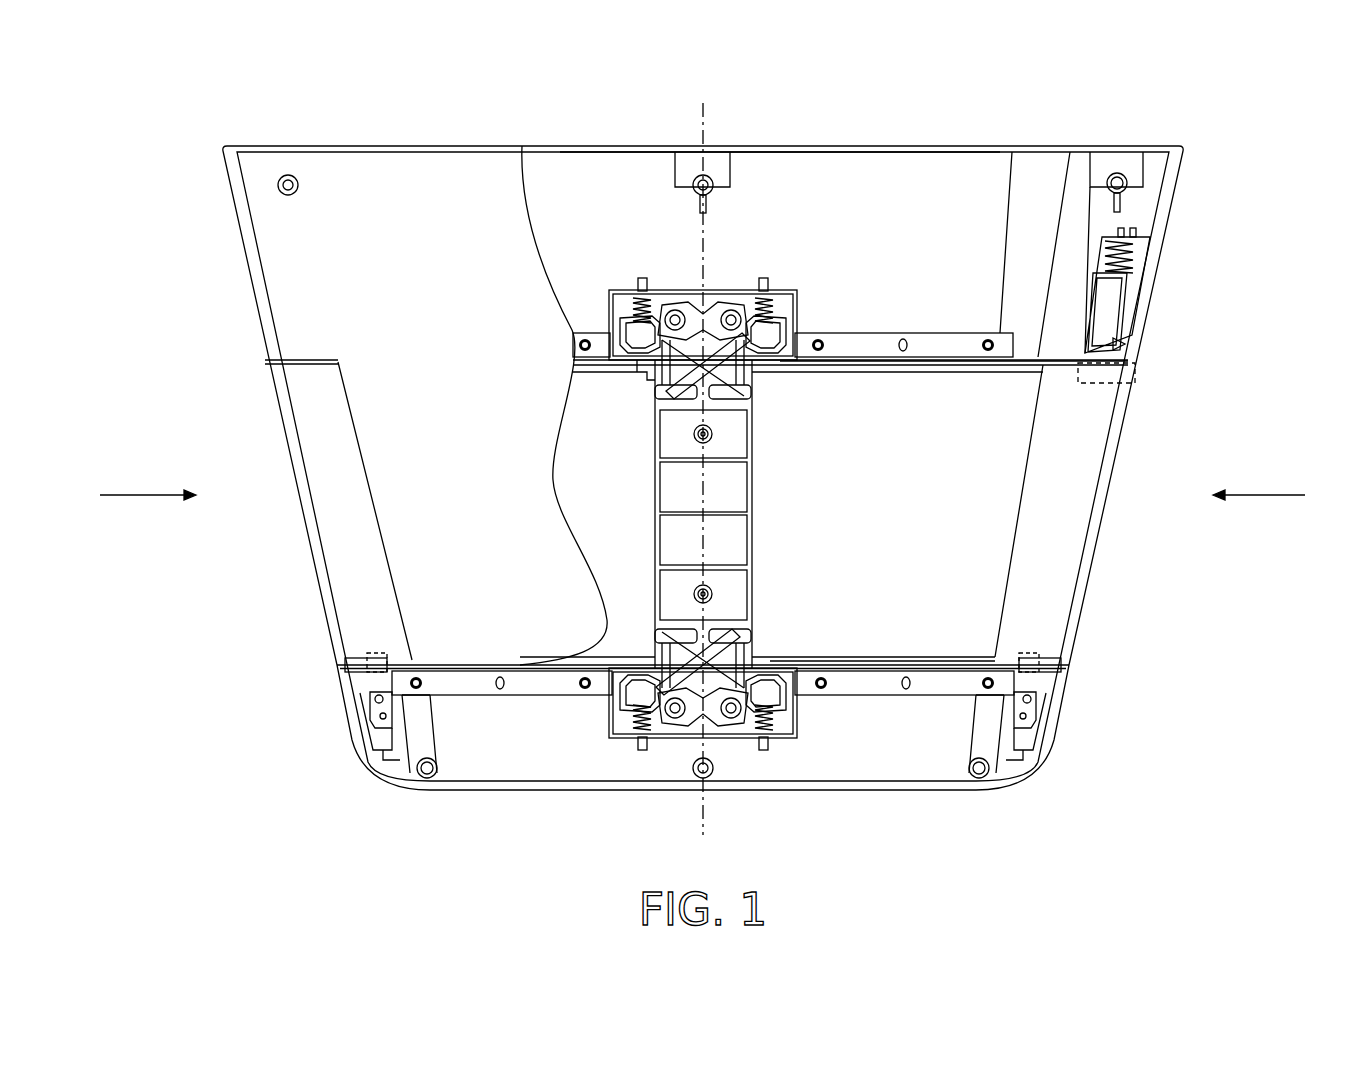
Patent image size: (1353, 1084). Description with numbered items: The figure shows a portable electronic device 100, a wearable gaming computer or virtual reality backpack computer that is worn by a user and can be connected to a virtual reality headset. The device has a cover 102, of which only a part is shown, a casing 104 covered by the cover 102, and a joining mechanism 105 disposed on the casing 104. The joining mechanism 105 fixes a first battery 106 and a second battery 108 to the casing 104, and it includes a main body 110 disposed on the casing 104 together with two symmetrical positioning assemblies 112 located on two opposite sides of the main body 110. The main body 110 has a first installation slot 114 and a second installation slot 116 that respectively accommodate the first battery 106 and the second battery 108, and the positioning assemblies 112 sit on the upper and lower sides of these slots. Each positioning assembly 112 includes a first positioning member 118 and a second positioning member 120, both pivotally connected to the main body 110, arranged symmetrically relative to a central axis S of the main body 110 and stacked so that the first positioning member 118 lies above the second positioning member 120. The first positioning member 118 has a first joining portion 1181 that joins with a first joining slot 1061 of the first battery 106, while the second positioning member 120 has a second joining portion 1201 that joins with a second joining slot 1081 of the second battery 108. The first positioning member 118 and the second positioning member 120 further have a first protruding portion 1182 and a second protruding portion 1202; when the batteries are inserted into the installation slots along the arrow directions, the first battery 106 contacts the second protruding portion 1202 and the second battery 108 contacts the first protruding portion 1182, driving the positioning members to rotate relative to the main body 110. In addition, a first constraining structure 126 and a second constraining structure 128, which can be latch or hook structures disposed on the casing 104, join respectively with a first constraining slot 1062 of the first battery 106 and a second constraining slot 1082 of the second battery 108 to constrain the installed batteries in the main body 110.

The portable electronic device 100 is at (192, 101).
The central axis S is at (702, 453).
The cover 102 is at (416, 187).
The casing 104 is at (938, 187).
The joining mechanism 105 is at (799, 288).
The first battery 106 is at (990, 527).
The second battery 108 is at (610, 527).
The main body 110 is at (935, 343).
The positioning assembly 112 is at (689, 740).
The first installation slot 114 is at (755, 565).
The second installation slot 116 is at (655, 566).
The first positioning member 118 is at (684, 311).
The second positioning member 120 is at (724, 311).
The first constraining structure 126 is at (1127, 343).
The second constraining structure 128 is at (372, 703).
The first joining slot 1061 is at (975, 370).
The first constraining slot 1062 is at (1103, 390).
The second joining slot 1081 is at (580, 367).
The second constraining slot 1082 is at (368, 655).
The first joining portion 1181 is at (785, 340).
The first protruding portion 1182 is at (653, 394).
The second joining portion 1201 is at (632, 345).
The second protruding portion 1202 is at (747, 395).